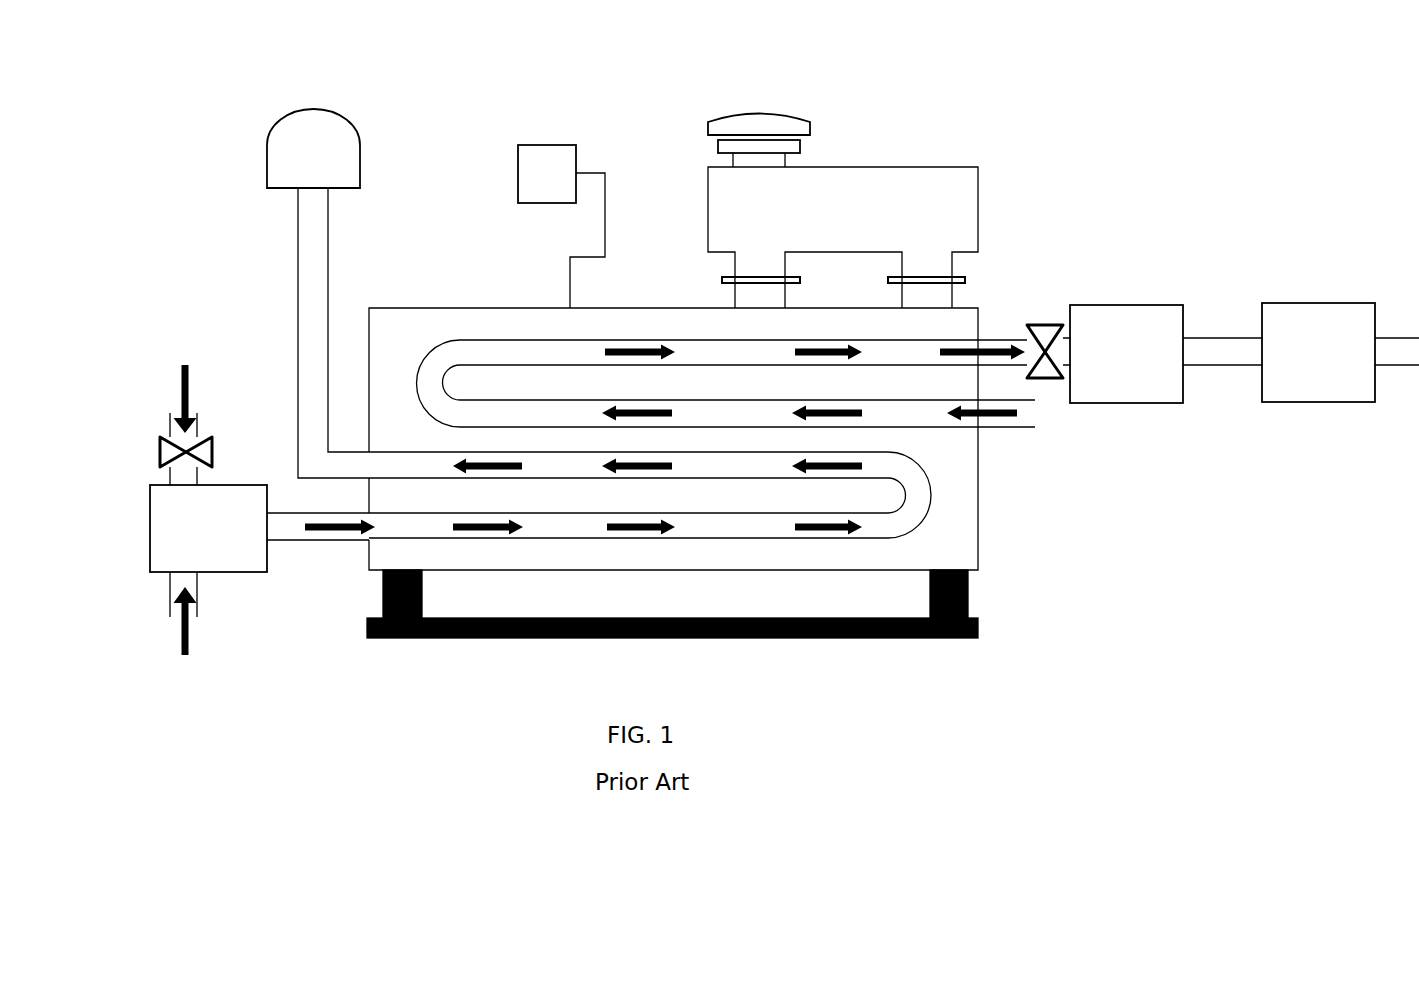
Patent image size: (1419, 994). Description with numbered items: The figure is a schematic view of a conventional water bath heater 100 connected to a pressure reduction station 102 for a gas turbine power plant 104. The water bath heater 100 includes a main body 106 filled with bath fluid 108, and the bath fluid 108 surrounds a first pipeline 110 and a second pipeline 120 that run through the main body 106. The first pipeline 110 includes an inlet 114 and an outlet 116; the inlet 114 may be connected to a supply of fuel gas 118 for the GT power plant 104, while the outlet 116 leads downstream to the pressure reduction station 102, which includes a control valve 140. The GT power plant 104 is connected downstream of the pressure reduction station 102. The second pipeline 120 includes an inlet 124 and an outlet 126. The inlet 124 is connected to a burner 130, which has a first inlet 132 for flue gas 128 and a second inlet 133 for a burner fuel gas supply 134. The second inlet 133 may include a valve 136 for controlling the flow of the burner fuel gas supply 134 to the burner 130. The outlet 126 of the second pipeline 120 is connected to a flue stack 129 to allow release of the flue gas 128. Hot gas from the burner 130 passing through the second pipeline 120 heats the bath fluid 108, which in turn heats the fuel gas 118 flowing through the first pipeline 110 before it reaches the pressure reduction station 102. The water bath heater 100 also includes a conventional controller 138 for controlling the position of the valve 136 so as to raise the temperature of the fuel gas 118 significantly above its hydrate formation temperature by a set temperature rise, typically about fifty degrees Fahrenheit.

The water bath heater 100 is at (190, 146).
The pressure reduction station 102 is at (1166, 354).
The gas turbine power plant 104 is at (1340, 352).
The main body 106 is at (442, 307).
The bath fluid 108 is at (489, 323).
The first pipeline 110 is at (952, 330).
The inlet 114 is at (982, 428).
The outlet 116 is at (997, 330).
The fuel gas 118 is at (1007, 418).
The second pipeline 120 is at (557, 539).
The inlet 124 is at (367, 543).
The outlet 126 is at (365, 450).
The flue gas 128 is at (333, 534).
The flue stack 129 is at (327, 140).
The burner 130 is at (208, 528).
The first inlet 132 is at (170, 575).
The second inlet 133 is at (170, 477).
The burner fuel gas supply 134 is at (178, 393).
The valve 136 is at (170, 453).
The controller 138 is at (561, 226).
The control valve 140 is at (1050, 368).